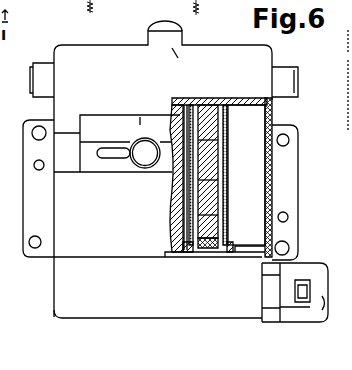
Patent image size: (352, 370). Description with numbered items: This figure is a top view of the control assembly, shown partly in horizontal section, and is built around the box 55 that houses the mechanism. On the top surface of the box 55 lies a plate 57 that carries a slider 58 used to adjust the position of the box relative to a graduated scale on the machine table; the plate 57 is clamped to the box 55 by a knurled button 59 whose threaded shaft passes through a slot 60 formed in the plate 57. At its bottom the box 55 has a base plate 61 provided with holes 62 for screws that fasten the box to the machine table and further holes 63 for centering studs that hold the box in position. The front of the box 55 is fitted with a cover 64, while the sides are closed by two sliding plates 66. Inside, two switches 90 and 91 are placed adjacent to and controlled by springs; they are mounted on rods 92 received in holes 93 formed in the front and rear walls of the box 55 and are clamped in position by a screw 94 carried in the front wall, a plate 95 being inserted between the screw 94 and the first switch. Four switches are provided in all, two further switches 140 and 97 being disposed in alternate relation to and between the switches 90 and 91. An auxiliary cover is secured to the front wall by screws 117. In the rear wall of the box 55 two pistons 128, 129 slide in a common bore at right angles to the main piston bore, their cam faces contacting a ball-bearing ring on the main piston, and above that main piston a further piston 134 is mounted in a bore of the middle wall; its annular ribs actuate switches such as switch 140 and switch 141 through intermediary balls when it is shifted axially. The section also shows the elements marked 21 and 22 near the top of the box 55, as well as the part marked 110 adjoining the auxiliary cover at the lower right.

The spring 21 is at (96, 14).
The spring 22 is at (208, 15).
The box 55 is at (110, 58).
The plate 57 is at (90, 166).
The slider 58 is at (102, 125).
The knurled button 59 is at (150, 163).
The slot 60 is at (116, 158).
The base plate 61 is at (290, 186).
The holes 62 is at (292, 140).
The holes 63 is at (290, 217).
The cover 64 is at (54, 283).
The sliding plates 66 is at (274, 128).
The switch 90 is at (231, 158).
The switch 91 is at (214, 216).
The rods 92 is at (228, 137).
The holes 93 is at (224, 100).
The screw 94 is at (198, 254).
The plate 95 is at (220, 237).
The switch 97 is at (232, 124).
The bracket 110 is at (315, 316).
The screws 117 is at (305, 288).
The piston 128 is at (38, 67).
The piston 129 is at (288, 77).
The piston 134 is at (160, 33).
The switch 140 is at (225, 183).
The switch 141 is at (326, 300).